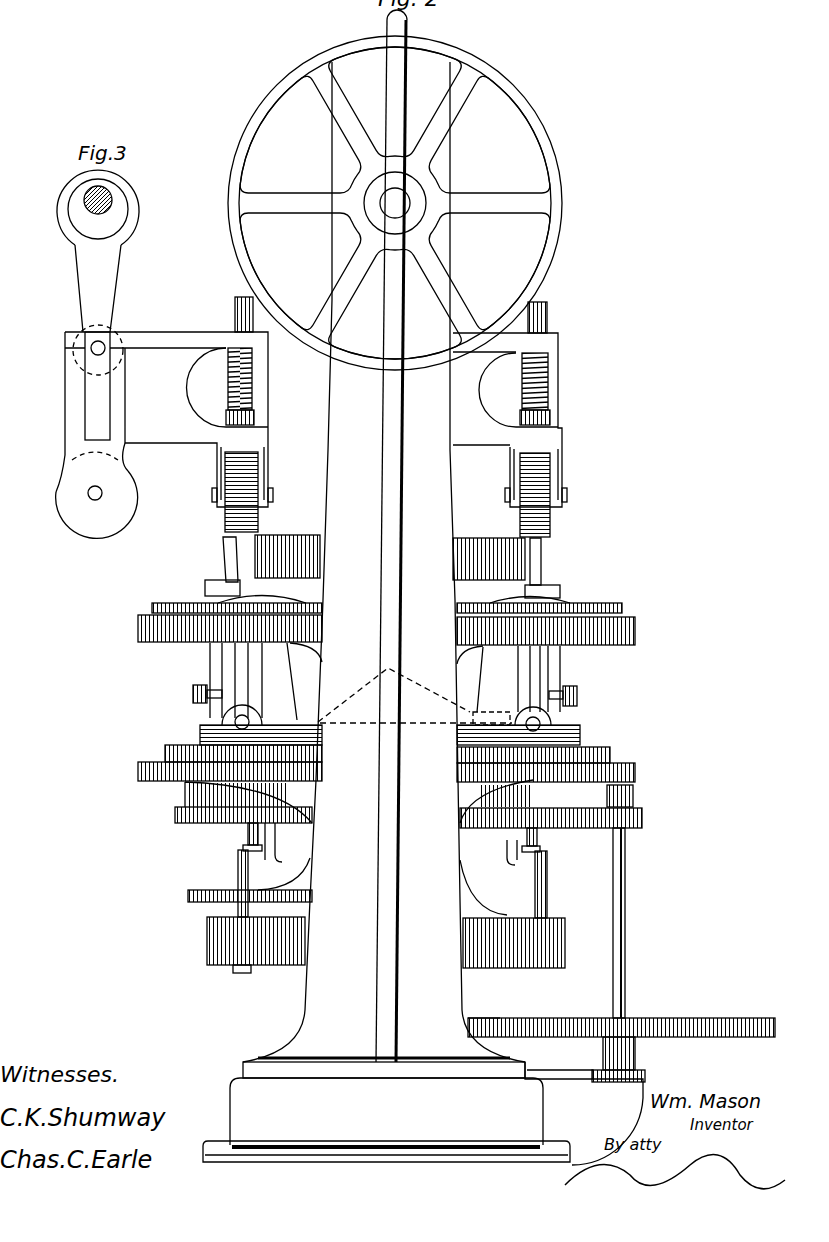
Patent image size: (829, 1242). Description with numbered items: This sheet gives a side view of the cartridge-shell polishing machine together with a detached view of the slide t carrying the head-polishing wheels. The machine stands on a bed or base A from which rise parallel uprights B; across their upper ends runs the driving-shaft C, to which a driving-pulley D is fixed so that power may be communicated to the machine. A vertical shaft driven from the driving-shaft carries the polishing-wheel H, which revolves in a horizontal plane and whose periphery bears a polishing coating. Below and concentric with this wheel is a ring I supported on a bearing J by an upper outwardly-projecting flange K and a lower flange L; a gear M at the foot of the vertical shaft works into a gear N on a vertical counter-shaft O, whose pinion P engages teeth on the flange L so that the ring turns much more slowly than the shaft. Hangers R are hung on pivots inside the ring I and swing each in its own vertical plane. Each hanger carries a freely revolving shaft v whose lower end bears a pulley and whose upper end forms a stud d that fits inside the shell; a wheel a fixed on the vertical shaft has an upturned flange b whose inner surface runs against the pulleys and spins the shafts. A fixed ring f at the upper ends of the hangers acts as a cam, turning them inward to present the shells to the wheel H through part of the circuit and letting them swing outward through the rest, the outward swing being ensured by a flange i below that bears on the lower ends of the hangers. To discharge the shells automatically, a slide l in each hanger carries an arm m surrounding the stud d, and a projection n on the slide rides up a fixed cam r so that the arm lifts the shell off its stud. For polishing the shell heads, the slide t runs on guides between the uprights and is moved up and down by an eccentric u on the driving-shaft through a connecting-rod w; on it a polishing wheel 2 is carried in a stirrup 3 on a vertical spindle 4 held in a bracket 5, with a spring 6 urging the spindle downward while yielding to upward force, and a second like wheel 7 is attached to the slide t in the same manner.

In FIG. 2, the bed or base A is at (423, 1113).
In FIG. 2, the upright B is at (384, 562).
In FIG. 2, the driving-shaft C is at (395, 203).
In FIG. 2, the driving-pulley D is at (393, 203).
In FIG. 2, the polishing wheel 2 is at (387, 494).
In FIG. 2, the stirrup 3 is at (394, 474).
In FIG. 2, the vertical spindle 4 is at (389, 315).
In FIG. 2, the bracket 5 is at (343, 419).
In FIG. 2, the spring 6 is at (394, 386).
In FIG. 2, the polishing-wheel H is at (390, 549).
In FIG. 2, the stud d is at (381, 561).
In FIG. 2, the arm m is at (381, 586).
In FIG. 2, the ring f is at (387, 603).
In FIG. 2, the hanger R is at (378, 681).
In FIG. 2, the slide l is at (384, 680).
In FIG. 2, the projection n is at (385, 695).
In FIG. 2, the fixed cam r is at (386, 699).
In FIG. 2, the ring I is at (390, 735).
In FIG. 2, the flange K is at (387, 754).
In FIG. 2, the bearing J is at (359, 801).
In FIG. 2, the flange L is at (243, 824).
In FIG. 2, the pinion P is at (558, 806).
In FIG. 2, the shaft v is at (246, 838).
In FIG. 2, the flange i is at (347, 886).
In FIG. 2, the flange b is at (386, 942).
In FIG. 2, the wheel a is at (249, 975).
In FIG. 2, the vertical counter-shaft O is at (626, 923).
In FIG. 2, the gear N is at (621, 1040).
In FIG. 2, the gear M is at (484, 1008).
In FIG. 3, the eccentric u is at (98, 207).
In FIG. 3, the connecting-rod w is at (98, 288).
In FIG. 3, the slide t is at (123, 408).
In FIG. 3, the second wheel 7 is at (97, 495).